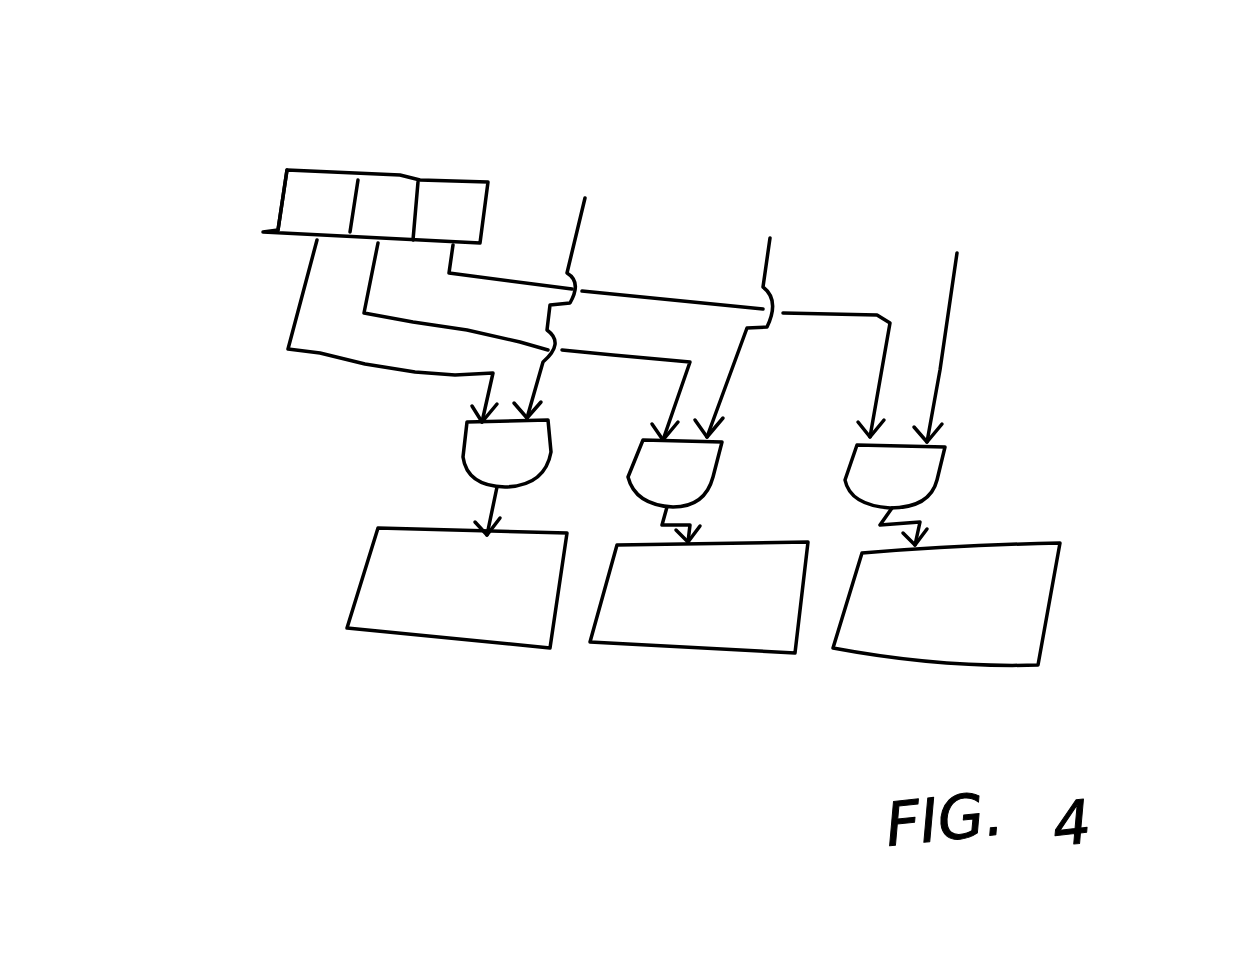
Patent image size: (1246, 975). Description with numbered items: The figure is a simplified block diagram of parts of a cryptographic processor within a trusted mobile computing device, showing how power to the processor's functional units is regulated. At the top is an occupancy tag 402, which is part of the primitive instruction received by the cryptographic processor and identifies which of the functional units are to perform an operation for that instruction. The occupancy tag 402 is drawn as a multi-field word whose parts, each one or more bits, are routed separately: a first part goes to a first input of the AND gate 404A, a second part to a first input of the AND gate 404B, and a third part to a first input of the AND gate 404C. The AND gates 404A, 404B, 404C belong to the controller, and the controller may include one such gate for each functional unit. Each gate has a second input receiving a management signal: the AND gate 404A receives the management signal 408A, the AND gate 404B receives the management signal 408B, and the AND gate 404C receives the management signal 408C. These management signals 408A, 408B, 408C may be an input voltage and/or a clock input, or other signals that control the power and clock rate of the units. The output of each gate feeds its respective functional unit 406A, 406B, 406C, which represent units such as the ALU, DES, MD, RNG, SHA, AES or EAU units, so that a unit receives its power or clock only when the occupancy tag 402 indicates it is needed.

The occupancy tag 402 is at (347, 167).
The AND gate 404A is at (463, 447).
The AND gate 404B is at (718, 470).
The AND gate 404C is at (945, 463).
The functional unit 406A is at (363, 583).
The functional unit 406B is at (628, 643).
The functional unit 406C is at (1058, 587).
The management signal 408A is at (582, 220).
The management signal 408B is at (773, 243).
The management signal 408C is at (960, 287).